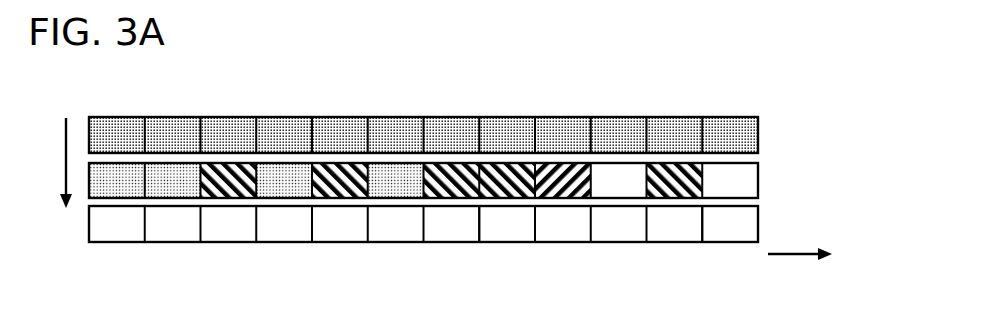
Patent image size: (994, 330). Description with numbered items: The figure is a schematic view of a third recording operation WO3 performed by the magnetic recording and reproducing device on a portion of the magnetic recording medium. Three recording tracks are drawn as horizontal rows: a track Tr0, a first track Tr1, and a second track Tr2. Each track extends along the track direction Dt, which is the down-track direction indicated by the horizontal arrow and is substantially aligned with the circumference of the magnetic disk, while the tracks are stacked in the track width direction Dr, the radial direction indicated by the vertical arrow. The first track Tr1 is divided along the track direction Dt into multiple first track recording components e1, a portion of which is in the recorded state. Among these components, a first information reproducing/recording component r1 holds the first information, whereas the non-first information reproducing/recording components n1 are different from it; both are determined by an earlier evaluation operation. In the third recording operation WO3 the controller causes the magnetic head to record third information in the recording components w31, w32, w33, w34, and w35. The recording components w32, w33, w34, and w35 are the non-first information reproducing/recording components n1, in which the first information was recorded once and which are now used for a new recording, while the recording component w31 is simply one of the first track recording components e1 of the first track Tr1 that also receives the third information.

The track Tr0 is at (758, 135).
The first track Tr1 is at (758, 180).
The second track Tr2 is at (758, 224).
The non-first information reproducing/recording component n1 is at (235, 186).
The first information reproducing/recording component r1 is at (567, 186).
The first track recording component e1 is at (672, 186).
The recording component w31 is at (675, 260).
The recording component w32 is at (505, 260).
The recording component w33 is at (443, 260).
The recording component w34 is at (339, 260).
The recording component w35 is at (226, 260).
The track width direction Dr is at (65, 180).
The track direction Dt is at (816, 254).
The third recording operation WO3 is at (899, 104).